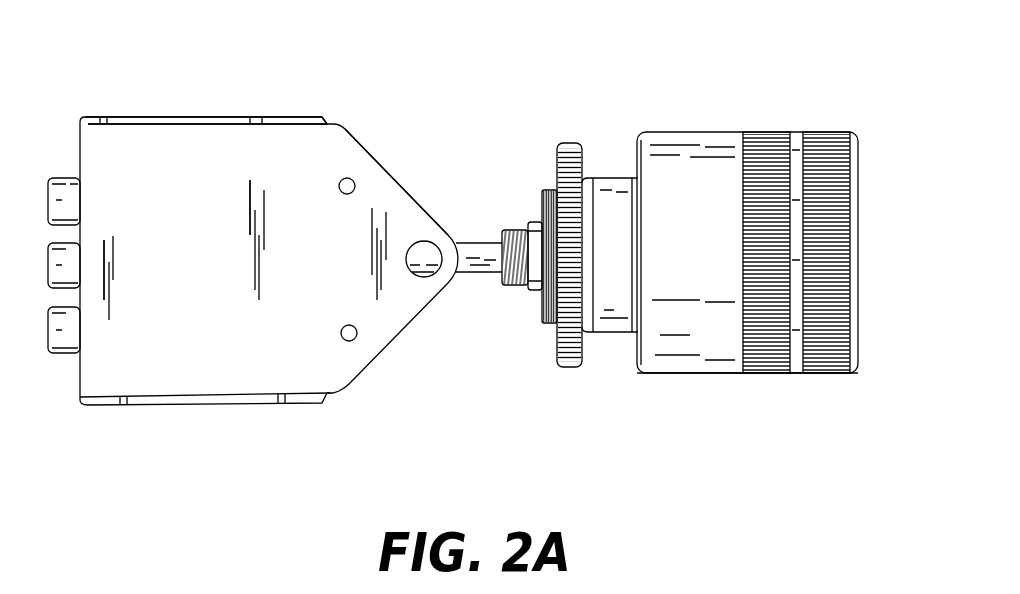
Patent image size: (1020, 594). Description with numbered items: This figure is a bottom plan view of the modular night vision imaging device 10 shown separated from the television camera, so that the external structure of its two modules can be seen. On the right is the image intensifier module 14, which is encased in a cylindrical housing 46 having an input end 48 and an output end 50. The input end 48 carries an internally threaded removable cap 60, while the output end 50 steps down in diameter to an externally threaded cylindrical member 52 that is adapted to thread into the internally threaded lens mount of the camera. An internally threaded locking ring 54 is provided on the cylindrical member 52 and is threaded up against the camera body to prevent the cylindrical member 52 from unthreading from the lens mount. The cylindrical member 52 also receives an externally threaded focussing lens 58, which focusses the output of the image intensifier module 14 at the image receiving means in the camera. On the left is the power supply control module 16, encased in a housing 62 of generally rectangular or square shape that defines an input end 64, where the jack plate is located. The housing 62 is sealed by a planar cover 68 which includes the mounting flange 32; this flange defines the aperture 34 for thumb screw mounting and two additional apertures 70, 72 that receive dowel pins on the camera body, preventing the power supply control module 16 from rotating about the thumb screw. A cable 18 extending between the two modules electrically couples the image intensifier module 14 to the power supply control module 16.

The night vision imaging device 10 is at (473, 375).
The image intensifier module 14 is at (722, 373).
The power supply control module 16 is at (232, 406).
The cable 18 is at (483, 234).
The mounting flange 32 is at (388, 197).
The aperture 34 is at (425, 278).
The cylindrical housing 46 is at (720, 132).
The input end 48 is at (860, 172).
The output end 50 is at (528, 290).
The externally threaded cylindrical member 52 is at (545, 190).
The locking ring 54 is at (578, 367).
The focussing lens 58 is at (502, 285).
The removable cap 60 is at (835, 373).
The housing 62 is at (197, 117).
The input end 64 is at (78, 397).
The planar cover 68 is at (208, 241).
The aperture 70 is at (344, 194).
The aperture 72 is at (345, 325).